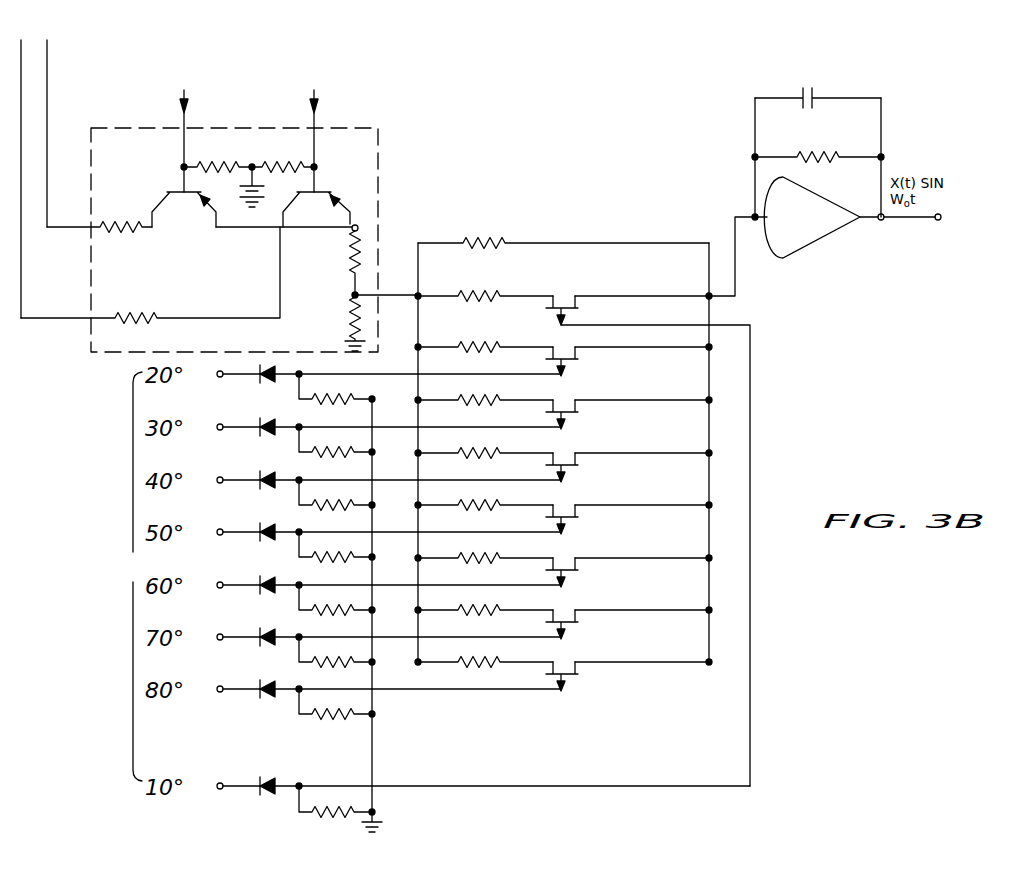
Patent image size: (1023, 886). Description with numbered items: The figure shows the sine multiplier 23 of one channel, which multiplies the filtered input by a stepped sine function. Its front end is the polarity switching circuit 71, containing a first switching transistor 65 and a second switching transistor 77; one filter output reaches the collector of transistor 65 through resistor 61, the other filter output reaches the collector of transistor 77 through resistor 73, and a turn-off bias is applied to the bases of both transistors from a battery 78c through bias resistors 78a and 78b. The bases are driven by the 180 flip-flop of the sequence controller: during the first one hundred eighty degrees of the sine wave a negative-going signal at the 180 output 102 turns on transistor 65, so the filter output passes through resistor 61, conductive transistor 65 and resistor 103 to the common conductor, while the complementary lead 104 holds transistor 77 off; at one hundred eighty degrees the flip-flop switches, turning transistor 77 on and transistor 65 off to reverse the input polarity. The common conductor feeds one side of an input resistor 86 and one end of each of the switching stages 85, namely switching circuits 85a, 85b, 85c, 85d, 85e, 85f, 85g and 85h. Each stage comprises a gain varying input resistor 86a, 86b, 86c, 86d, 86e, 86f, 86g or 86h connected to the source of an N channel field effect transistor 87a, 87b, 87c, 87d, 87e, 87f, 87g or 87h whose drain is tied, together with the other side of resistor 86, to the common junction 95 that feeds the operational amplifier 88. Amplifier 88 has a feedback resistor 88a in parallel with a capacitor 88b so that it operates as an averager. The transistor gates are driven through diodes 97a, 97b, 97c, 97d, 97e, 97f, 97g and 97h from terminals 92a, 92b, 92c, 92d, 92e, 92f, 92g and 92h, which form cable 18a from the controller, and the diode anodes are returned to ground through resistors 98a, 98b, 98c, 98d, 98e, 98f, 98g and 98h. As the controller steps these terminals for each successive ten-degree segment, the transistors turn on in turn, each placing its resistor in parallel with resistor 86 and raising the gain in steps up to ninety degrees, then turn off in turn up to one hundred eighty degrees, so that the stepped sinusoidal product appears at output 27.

The 180 flip-flop 180 is at (337, 63).
The input lead 104 is at (185, 112).
The 180 output 102 is at (316, 112).
The polarity switching circuit 71 is at (378, 186).
The second switching transistor 77 is at (172, 188).
The first switching transistor 65 is at (334, 190).
The resistor 73 is at (140, 220).
The resistor 61 is at (150, 316).
The bias resistor 78a is at (276, 164).
The bias resistor 78b is at (212, 164).
The bias battery 78c is at (236, 200).
The resistor 103 is at (352, 262).
The cable 18a is at (131, 576).
The terminal 92a is at (219, 783).
The terminal 92b is at (220, 370).
The terminal 92c is at (226, 410).
The terminal 92d is at (226, 463).
The terminal 92e is at (226, 515).
The terminal 92f is at (226, 568).
The terminal 92g is at (226, 620).
The terminal 92h is at (226, 672).
The diode 97a is at (265, 778).
The diode 97b is at (268, 366).
The diode 97c is at (265, 418).
The diode 97d is at (265, 471).
The diode 97e is at (265, 523).
The diode 97f is at (265, 576).
The diode 97g is at (265, 628).
The diode 97h is at (265, 680).
The resistor 98a is at (312, 814).
The resistor 98b is at (320, 402).
The resistor 98c is at (320, 455).
The resistor 98d is at (320, 508).
The resistor 98e is at (320, 560).
The resistor 98f is at (320, 613).
The resistor 98g is at (320, 665).
The resistor 98h is at (326, 717).
The input resistor 86 is at (478, 242).
The gain varying input resistor 86a is at (490, 290).
The gain varying input resistor 86b is at (490, 341).
The gain varying input resistor 86c is at (487, 394).
The gain varying input resistor 86d is at (487, 447).
The gain varying input resistor 86e is at (487, 499).
The gain varying input resistor 86f is at (487, 552).
The gain varying input resistor 86g is at (487, 604).
The gain varying input resistor 86h is at (487, 656).
The switching stages 85 is at (586, 276).
The switching circuit 85a is at (677, 291).
The switching circuit 85b is at (677, 342).
The switching circuit 85c is at (677, 395).
The switching circuit 85d is at (677, 448).
The switching circuit 85e is at (677, 500).
The switching circuit 85f is at (677, 553).
The switching circuit 85g is at (677, 605).
The switching circuit 85h is at (677, 657).
The switching transistor 87a is at (558, 306).
The switching transistor 87b is at (558, 357).
The switching transistor 87c is at (558, 410).
The switching transistor 87d is at (558, 463).
The switching transistor 87e is at (558, 515).
The switching transistor 87f is at (558, 568).
The switching transistor 87g is at (558, 620).
The switching transistor 87h is at (558, 672).
The common junction 95 is at (712, 300).
The operational amplifier 88 is at (862, 263).
The feedback resistor 88a is at (814, 163).
The capacitor 88b is at (803, 91).
The output 27 is at (942, 215).
The sine multiplier 23 is at (610, 833).